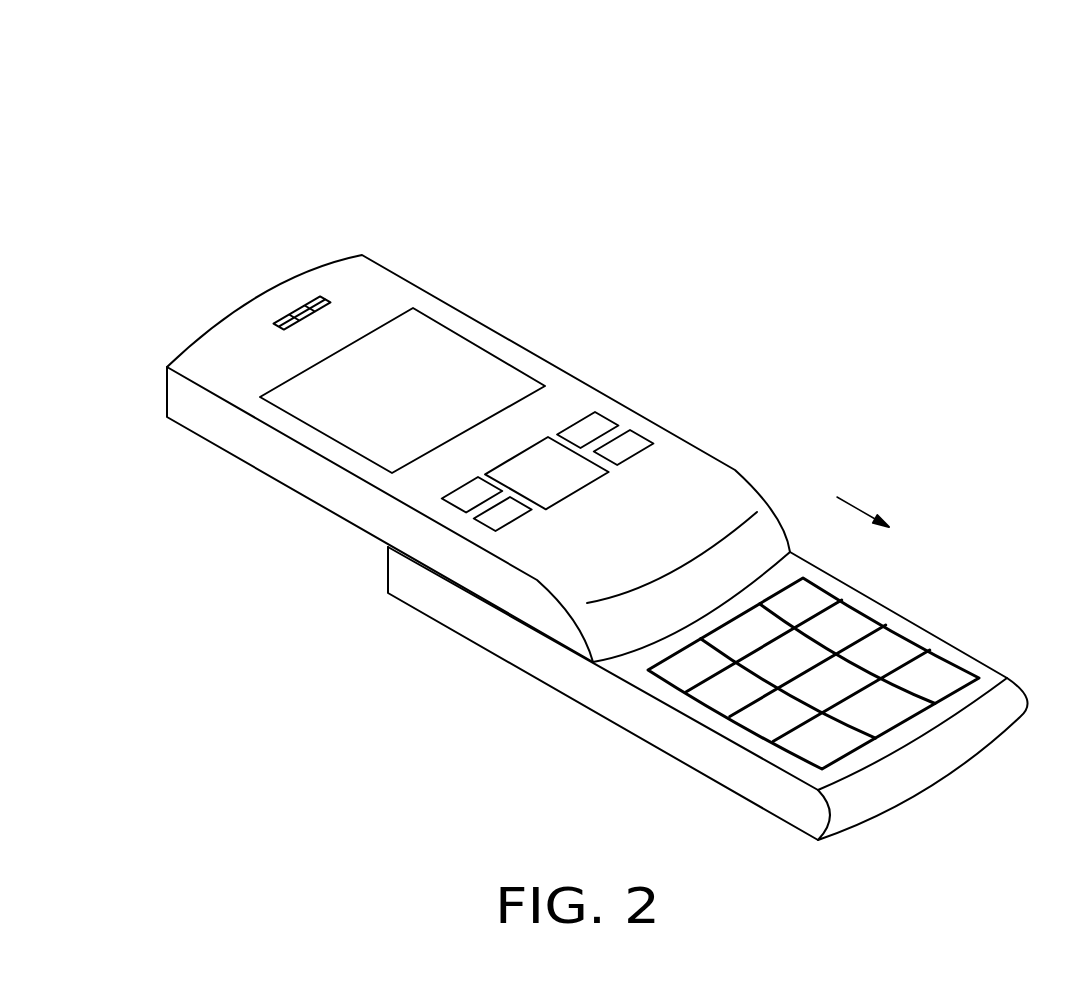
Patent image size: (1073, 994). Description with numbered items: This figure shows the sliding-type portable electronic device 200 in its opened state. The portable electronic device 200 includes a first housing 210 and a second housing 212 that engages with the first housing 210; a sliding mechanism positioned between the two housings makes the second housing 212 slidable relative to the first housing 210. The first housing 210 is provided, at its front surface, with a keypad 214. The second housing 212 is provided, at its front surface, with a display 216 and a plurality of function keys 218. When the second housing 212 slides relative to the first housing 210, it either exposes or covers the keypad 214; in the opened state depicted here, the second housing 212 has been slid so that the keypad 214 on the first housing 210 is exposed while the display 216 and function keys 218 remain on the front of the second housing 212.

The portable electronic device 200 is at (568, 55).
The first housing 210 is at (985, 678).
The second housing 212 is at (702, 485).
The keypad 214 is at (882, 653).
The display 216 is at (432, 355).
The function keys 218 is at (597, 425).